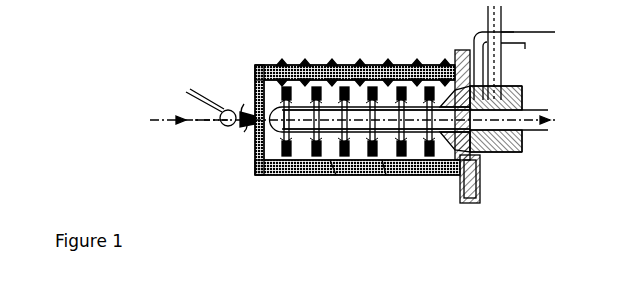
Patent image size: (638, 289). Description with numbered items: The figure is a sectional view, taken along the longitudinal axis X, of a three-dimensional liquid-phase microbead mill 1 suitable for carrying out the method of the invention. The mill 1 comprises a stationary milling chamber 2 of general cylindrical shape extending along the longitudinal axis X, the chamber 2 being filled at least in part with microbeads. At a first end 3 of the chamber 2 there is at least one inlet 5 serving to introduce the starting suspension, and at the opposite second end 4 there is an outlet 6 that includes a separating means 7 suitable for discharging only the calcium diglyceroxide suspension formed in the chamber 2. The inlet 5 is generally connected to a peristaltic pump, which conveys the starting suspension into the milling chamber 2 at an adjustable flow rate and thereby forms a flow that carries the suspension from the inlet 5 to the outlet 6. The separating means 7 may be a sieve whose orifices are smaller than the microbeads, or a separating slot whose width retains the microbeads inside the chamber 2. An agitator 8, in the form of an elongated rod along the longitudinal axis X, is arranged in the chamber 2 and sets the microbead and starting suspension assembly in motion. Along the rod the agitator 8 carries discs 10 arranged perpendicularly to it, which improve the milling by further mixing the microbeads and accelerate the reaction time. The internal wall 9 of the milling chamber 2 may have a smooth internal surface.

The three-dimensional microbead mill 1 is at (252, 34).
The stationary milling chamber 2 is at (355, 50).
The first end 3 is at (236, 140).
The second end 4 is at (492, 162).
The inlet 5 is at (244, 104).
The outlet 6 is at (518, 40).
The separating means 7 is at (527, 98).
The agitator 8 is at (333, 175).
The internal wall 9 is at (385, 175).
The discs 10 is at (408, 64).
The longitudinal axis X is at (361, 120).